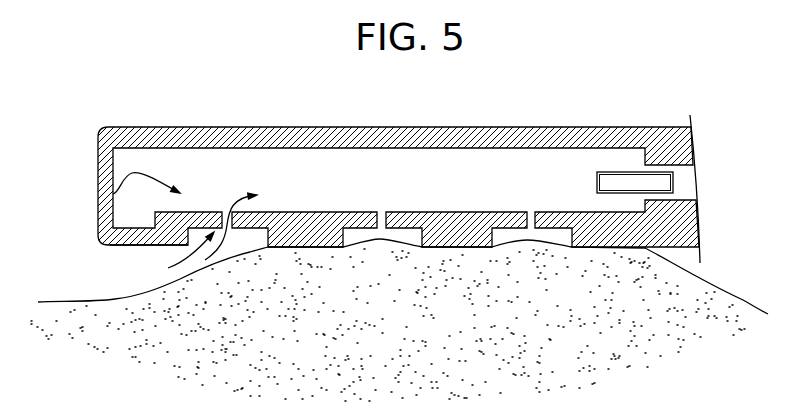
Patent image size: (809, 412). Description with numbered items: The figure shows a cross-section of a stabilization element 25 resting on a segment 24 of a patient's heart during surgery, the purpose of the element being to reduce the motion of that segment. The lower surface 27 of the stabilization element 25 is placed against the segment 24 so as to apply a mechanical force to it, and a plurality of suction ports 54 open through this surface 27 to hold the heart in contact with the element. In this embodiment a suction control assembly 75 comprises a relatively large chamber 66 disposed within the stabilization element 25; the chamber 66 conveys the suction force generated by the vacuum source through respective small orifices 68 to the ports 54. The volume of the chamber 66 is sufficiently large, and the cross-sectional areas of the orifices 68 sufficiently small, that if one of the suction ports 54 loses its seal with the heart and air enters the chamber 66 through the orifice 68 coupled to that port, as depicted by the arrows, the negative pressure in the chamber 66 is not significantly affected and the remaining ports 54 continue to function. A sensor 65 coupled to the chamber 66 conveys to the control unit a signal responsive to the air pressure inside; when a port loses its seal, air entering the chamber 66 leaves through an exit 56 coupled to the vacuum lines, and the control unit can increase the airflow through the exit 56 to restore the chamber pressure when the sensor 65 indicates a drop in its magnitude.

The stabilization element 25 is at (363, 127).
The suction control assembly 75 is at (110, 189).
The surface 27 is at (135, 245).
The chamber 66 is at (375, 182).
The suction ports 54 is at (497, 228).
The orifices 68 is at (528, 212).
The sensor 65 is at (597, 181).
The exit 56 is at (692, 181).
The segment 24 is at (393, 326).